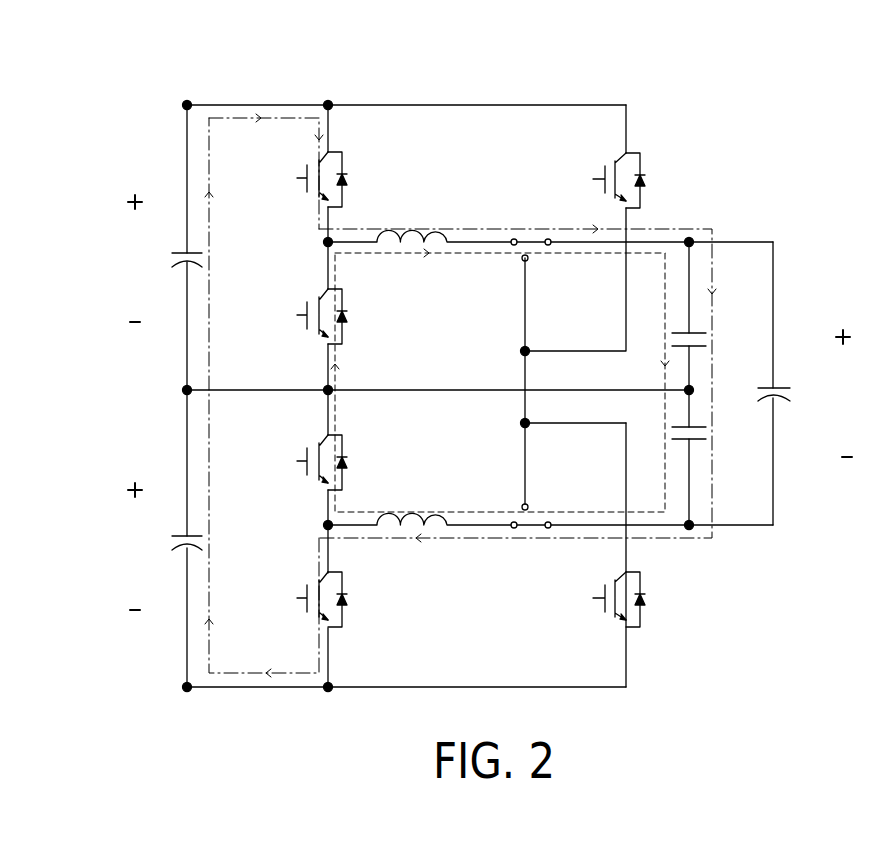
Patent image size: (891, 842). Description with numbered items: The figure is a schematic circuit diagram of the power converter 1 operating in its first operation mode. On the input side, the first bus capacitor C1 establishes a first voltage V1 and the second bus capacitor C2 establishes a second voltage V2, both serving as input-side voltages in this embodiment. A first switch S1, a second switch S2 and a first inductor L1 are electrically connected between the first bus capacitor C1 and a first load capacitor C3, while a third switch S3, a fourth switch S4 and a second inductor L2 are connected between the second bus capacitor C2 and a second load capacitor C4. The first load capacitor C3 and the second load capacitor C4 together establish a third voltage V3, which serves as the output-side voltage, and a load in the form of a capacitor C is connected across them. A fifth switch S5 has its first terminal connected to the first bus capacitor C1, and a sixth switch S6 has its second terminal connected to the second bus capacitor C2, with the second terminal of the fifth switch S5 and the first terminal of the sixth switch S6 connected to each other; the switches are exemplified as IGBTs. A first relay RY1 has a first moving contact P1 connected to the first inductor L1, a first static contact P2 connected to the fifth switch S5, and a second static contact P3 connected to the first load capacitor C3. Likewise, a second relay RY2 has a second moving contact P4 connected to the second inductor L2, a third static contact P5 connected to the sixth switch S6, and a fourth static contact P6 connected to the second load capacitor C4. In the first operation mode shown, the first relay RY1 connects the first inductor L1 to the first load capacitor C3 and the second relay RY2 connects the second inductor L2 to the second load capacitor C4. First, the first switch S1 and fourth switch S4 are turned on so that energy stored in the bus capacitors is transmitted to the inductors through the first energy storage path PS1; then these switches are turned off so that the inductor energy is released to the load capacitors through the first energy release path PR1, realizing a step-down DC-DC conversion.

The power converter 1 is at (888, 79).
The first bus capacitor C1 is at (207, 266).
The second bus capacitor C2 is at (207, 546).
The first voltage V1 is at (135, 258).
The second voltage V2 is at (135, 546).
The third voltage V3 is at (849, 393).
The first switch S1 is at (340, 179).
The second switch S2 is at (340, 316).
The third switch S3 is at (340, 462).
The fourth switch S4 is at (340, 599).
The fifth switch S5 is at (609, 172).
The sixth switch S6 is at (609, 609).
The first inductor L1 is at (419, 220).
The second inductor L2 is at (419, 503).
The first relay RY1 is at (536, 242).
The second relay RY2 is at (536, 501).
The first moving contact P1 is at (499, 256).
The first static contact P2 is at (541, 275).
The second static contact P3 is at (567, 256).
The second moving contact P4 is at (500, 512).
The third static contact P5 is at (540, 466).
The fourth static contact P6 is at (567, 512).
The first load capacitor C3 is at (709, 341).
The second load capacitor C4 is at (709, 433).
The capacitor C is at (786, 394).
The first energy release path PR1 is at (650, 253).
The first energy storage path PS1 is at (695, 228).